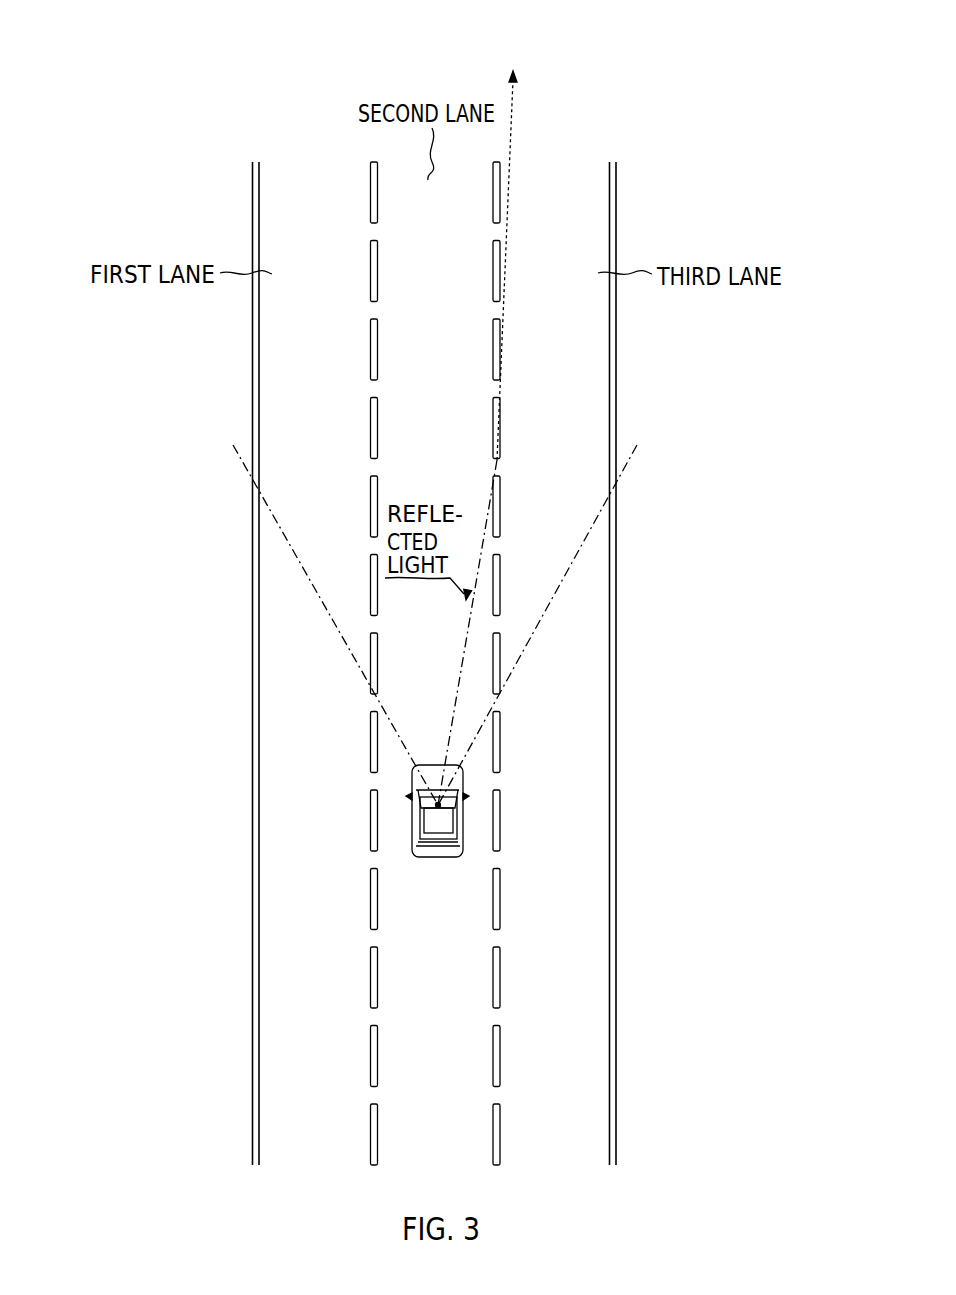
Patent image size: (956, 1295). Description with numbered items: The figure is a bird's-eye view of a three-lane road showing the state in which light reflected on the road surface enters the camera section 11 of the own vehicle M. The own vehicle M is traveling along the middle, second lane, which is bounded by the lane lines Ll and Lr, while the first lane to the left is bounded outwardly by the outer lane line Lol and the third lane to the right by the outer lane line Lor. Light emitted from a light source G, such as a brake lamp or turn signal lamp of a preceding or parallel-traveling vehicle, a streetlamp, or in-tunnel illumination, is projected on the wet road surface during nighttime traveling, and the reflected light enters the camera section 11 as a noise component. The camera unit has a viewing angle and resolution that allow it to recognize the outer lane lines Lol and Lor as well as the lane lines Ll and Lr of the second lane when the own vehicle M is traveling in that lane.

The camera section 11 is at (436, 806).
The own vehicle M is at (440, 858).
The light source G is at (513, 71).
The outer lane line of the first lane Lol is at (253, 1101).
The outer lane line of the third lane Lor is at (616, 1100).
The left lane line of the second lane Ll is at (370, 1133).
The right lane line of the second lane Lr is at (501, 1132).